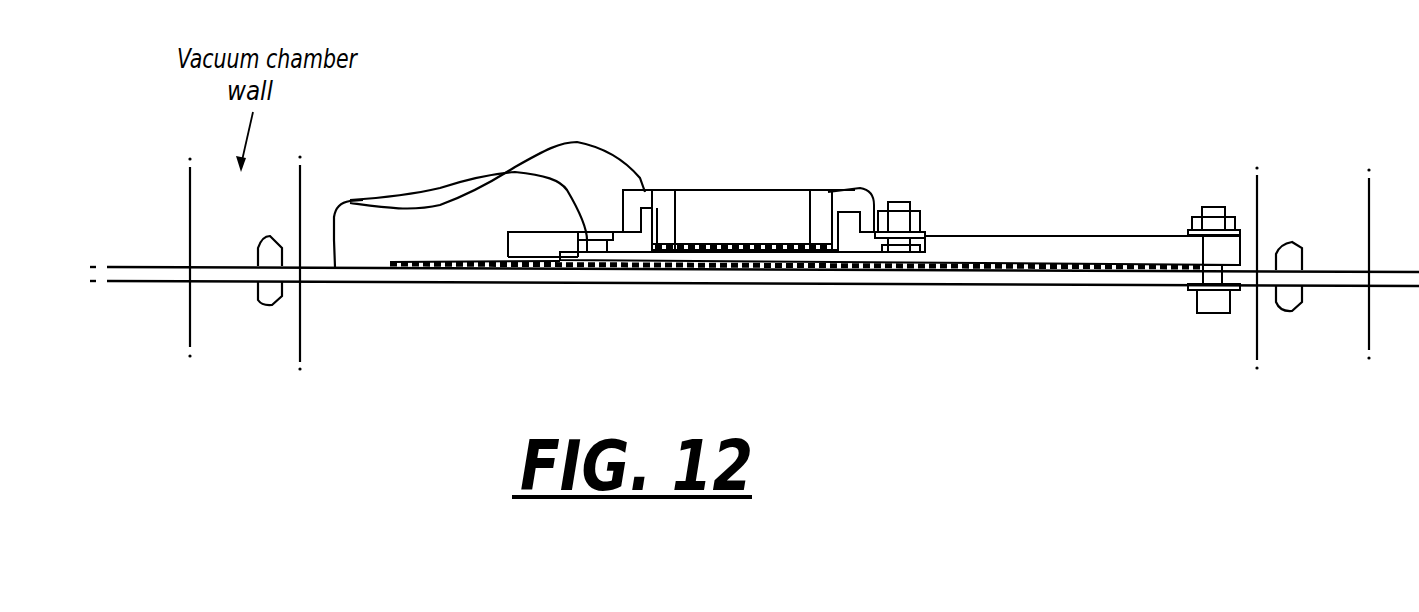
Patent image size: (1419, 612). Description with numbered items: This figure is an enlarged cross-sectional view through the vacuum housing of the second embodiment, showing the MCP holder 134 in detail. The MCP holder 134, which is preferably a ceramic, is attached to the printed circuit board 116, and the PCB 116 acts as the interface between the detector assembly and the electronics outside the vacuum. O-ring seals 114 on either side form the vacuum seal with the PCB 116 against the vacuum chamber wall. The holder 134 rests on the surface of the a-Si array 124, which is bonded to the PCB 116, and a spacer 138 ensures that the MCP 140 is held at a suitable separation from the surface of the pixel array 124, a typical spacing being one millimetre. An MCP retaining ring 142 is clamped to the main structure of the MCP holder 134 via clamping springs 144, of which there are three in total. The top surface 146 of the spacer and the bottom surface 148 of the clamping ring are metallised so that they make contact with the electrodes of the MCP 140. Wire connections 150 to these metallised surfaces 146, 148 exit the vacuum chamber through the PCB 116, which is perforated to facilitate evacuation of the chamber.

The O-ring seal 114 is at (266, 306).
The printed circuit board 116 is at (1350, 271).
The a-Si array 124 is at (759, 284).
The MCP holder 134 is at (542, 246).
The spacer 138 is at (569, 253).
The MCP 140 is at (722, 248).
The MCP retaining ring 142 is at (660, 190).
The clamping spring 144 is at (882, 188).
The top surface of the spacer 146 is at (824, 261).
The bottom surface of the clamping ring 148 is at (846, 200).
The wire connection 150 is at (474, 176).